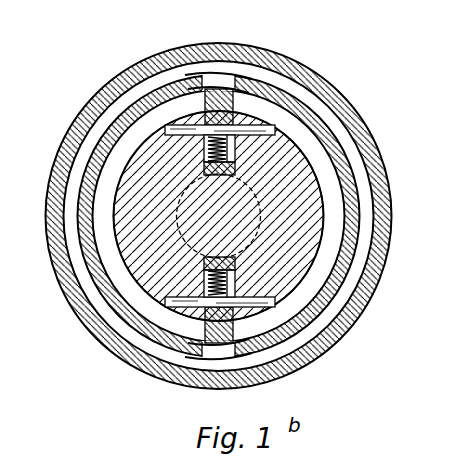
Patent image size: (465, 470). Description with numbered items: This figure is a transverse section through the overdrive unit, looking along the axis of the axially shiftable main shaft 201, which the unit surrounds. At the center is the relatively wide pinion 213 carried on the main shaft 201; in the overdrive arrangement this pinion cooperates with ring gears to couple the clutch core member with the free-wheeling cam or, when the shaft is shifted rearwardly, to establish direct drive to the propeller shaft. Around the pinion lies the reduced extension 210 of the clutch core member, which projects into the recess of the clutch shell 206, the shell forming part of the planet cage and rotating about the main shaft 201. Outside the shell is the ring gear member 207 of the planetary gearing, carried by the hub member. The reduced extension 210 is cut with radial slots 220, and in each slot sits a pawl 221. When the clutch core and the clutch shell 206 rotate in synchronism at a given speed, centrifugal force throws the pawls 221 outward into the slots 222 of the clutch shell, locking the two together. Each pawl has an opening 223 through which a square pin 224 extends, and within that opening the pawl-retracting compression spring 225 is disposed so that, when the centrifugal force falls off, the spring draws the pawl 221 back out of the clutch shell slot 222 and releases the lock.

The main shaft 201 is at (282, 268).
The clutch shell 206 is at (357, 213).
The ring gear member 207 is at (365, 157).
The reduced extension 210 is at (323, 250).
The pinion 213 is at (258, 194).
The radial slots 220 is at (247, 117).
The pawls 221 is at (215, 86).
The slots 222 is at (225, 85).
The openings 223 is at (272, 143).
The square pins 224 is at (313, 112).
The pawl-retracting compression springs 225 is at (208, 163).